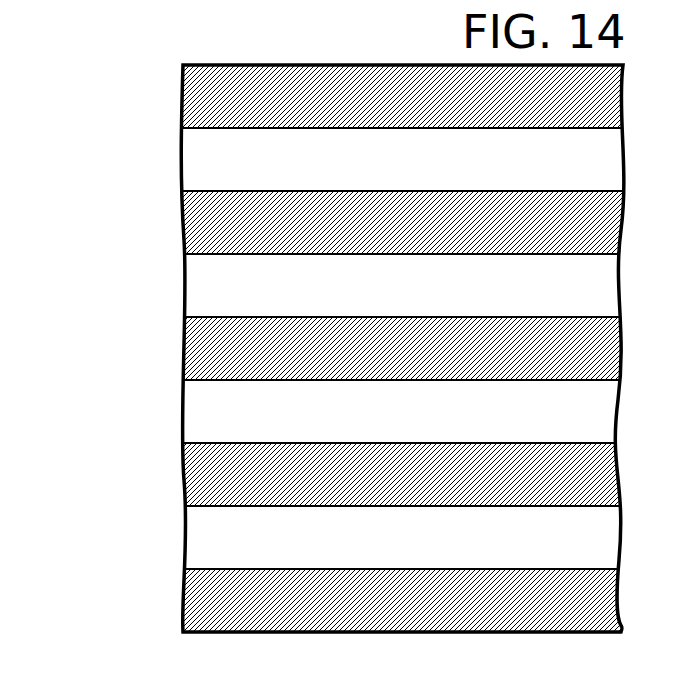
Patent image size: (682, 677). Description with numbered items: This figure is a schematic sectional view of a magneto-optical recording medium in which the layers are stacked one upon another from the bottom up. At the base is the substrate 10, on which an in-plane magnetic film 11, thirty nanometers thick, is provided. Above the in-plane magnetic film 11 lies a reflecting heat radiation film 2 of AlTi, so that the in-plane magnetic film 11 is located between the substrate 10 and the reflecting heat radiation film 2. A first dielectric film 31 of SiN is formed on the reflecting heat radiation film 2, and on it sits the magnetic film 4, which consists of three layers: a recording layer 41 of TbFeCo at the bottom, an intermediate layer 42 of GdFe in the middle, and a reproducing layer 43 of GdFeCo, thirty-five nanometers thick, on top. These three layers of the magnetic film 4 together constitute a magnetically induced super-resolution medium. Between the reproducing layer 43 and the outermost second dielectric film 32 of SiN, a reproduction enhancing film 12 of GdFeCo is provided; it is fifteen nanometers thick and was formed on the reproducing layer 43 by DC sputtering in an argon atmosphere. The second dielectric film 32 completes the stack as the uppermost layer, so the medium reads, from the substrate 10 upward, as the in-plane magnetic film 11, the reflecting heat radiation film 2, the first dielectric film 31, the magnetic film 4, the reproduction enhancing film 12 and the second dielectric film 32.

The second dielectric film 32 is at (206, 97).
The reproduction enhancing film 12 is at (202, 155).
The magnetic film 4 is at (63, 217).
The reproducing layer 43 is at (206, 220).
The intermediate layer 42 is at (202, 283).
The recording layer 41 is at (206, 347).
The first dielectric film 31 is at (202, 409).
The reflecting heat radiation film 2 is at (206, 471).
The in-plane magnetic film 11 is at (202, 537).
The substrate 10 is at (206, 599).